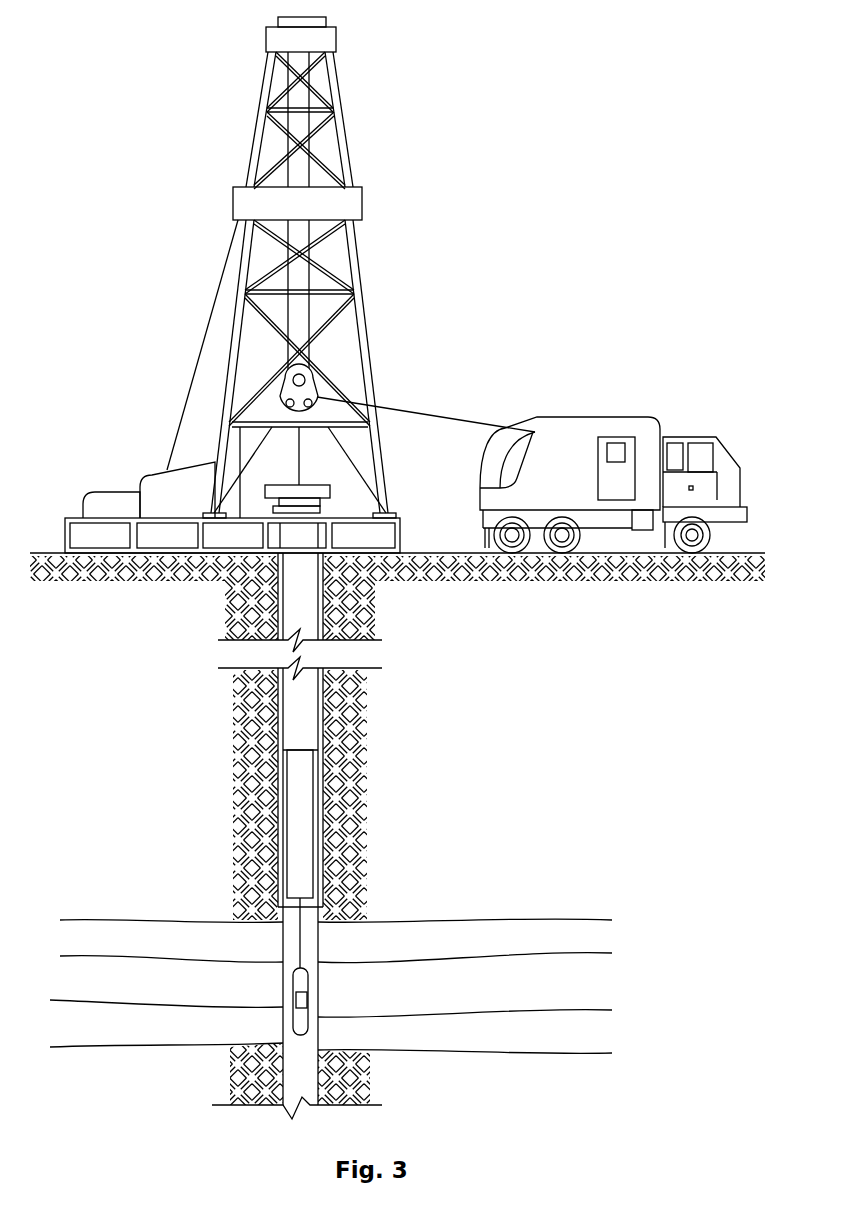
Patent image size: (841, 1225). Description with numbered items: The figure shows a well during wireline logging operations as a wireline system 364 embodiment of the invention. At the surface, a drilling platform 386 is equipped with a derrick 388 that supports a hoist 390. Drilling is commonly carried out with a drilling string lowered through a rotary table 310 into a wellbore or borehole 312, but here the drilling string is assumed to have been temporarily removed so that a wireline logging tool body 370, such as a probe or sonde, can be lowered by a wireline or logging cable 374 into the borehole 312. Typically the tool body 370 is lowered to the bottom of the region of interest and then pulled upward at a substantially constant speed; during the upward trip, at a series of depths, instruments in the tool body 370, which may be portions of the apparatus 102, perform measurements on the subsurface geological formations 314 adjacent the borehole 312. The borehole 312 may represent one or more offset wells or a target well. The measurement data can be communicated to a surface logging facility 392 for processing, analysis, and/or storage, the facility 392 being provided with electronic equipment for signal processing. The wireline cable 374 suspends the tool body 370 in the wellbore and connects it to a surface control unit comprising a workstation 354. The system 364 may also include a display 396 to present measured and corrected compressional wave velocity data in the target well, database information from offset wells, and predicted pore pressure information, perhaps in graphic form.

The wireline system 364 is at (552, 208).
The derrick 388 is at (386, 507).
The hoist 390 is at (313, 370).
The rotary table 310 is at (335, 487).
The drilling platform 386 is at (400, 540).
The wireline or logging cable 374 is at (415, 410).
The surface logging facility 392 is at (565, 417).
The workstation 354 is at (598, 478).
The display 396 is at (615, 442).
The borehole 312 is at (282, 936).
The wireline logging tool body 370 is at (313, 970).
The apparatus 102 is at (307, 998).
The subsurface geological formations 314 is at (622, 918).